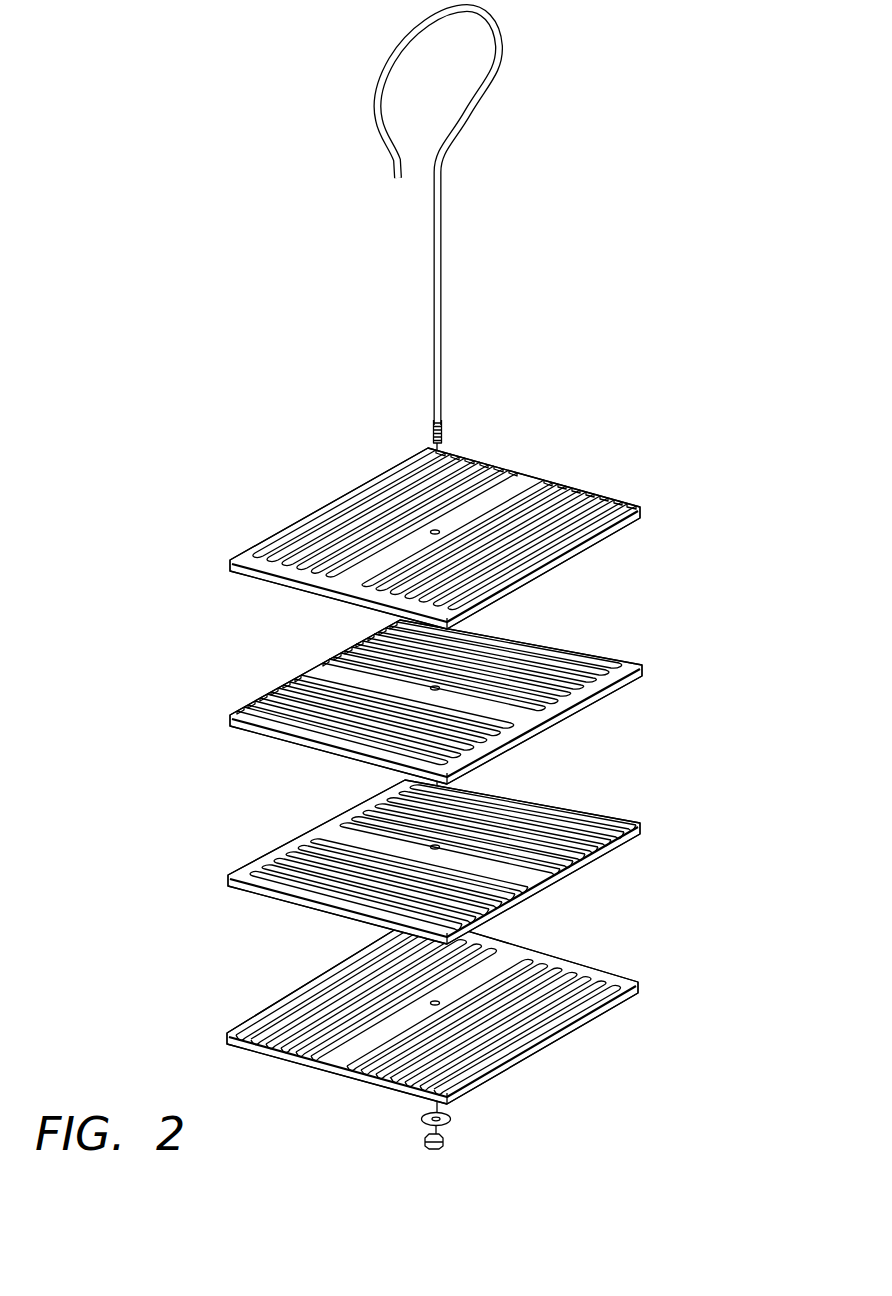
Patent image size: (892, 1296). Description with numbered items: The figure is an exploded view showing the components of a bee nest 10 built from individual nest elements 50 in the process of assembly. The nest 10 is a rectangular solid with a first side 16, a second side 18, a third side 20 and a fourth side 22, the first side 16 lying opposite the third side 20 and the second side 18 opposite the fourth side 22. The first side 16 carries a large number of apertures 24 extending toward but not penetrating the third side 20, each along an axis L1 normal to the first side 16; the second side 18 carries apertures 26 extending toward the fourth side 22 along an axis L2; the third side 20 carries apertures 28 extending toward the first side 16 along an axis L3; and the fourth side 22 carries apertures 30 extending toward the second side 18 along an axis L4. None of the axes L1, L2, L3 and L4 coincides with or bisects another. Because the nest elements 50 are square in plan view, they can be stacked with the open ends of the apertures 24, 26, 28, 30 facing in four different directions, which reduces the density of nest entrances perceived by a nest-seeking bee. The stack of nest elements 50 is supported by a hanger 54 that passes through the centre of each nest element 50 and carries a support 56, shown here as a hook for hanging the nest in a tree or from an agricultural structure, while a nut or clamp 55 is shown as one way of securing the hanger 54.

The nest 10 is at (230, 376).
The first side 16 is at (246, 911).
The second side 18 is at (662, 688).
The third side 20 is at (603, 477).
The fourth side 22 is at (257, 515).
The apertures 24 is at (252, 1050).
The apertures 26 is at (640, 842).
The apertures 28 is at (510, 465).
The apertures 30 is at (283, 688).
The nest elements 50 is at (587, 562).
The hanger 54 is at (442, 298).
The nut or clamp 55 is at (444, 1139).
The support 56 is at (498, 67).
The axis L1 is at (279, 1102).
The axis L2 is at (593, 905).
The axis L3 is at (596, 444).
The axis L4 is at (256, 639).